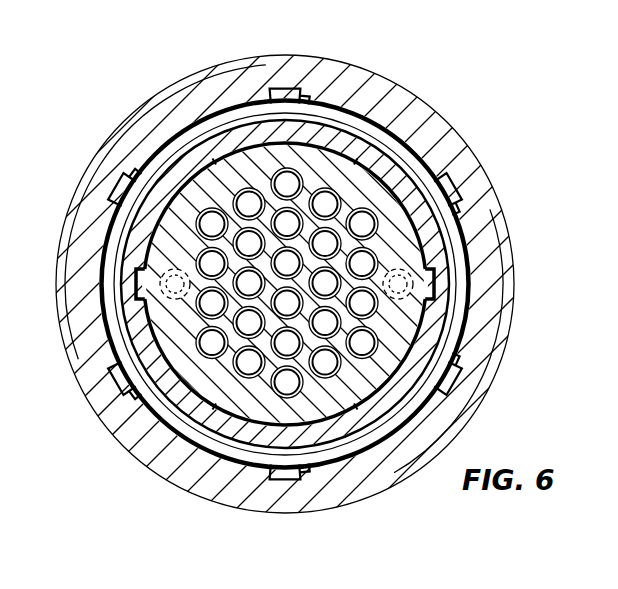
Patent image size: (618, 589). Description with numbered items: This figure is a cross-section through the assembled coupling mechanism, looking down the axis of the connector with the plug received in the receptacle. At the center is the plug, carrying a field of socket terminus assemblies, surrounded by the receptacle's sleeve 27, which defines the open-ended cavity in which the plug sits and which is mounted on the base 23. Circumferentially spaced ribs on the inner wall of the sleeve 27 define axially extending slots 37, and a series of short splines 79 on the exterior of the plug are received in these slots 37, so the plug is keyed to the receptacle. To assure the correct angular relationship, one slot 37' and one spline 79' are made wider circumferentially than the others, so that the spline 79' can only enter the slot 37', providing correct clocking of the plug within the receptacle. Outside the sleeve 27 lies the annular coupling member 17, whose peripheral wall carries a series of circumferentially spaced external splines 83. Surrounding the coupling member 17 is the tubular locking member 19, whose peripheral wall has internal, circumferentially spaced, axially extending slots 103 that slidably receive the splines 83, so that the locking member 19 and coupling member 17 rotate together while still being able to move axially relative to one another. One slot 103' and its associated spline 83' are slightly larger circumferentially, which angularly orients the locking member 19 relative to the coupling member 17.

The locking member 19 is at (253, 40).
The coupling member 17 is at (207, 122).
The sleeve 27 is at (413, 200).
The slots 37 is at (356, 222).
The slot 37' is at (216, 291).
The splines 79 is at (309, 294).
The spline 79' is at (280, 294).
The external splines 83 is at (256, 421).
The spline 83' is at (248, 193).
The slots 103 is at (338, 319).
The slot 103' is at (178, 148).
The base 23 is at (309, 294).